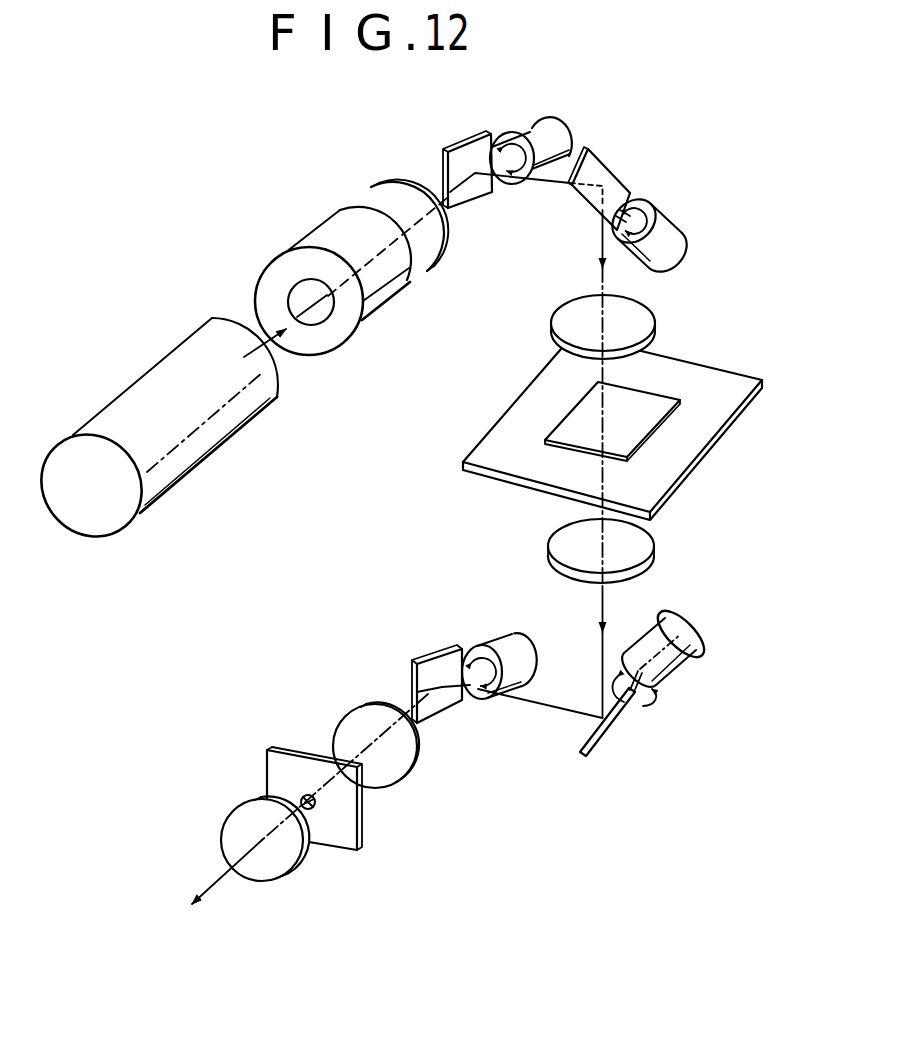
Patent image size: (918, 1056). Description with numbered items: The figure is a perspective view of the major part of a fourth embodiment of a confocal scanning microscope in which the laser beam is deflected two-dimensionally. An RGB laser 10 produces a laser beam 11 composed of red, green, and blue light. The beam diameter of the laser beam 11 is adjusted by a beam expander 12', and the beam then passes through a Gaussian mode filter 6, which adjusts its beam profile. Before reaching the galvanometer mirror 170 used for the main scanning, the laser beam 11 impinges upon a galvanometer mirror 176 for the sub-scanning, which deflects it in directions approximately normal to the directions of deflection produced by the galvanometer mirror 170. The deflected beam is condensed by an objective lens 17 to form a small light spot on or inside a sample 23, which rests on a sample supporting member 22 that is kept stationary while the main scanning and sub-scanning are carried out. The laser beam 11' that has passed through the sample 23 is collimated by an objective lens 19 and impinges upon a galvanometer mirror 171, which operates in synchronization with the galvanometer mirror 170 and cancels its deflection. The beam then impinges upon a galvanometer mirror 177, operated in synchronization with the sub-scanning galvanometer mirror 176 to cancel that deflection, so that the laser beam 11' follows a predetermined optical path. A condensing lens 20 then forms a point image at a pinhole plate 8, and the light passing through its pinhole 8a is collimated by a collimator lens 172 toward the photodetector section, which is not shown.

The RGB laser 10 is at (187, 367).
The laser beam 11 is at (386, 265).
The beam expander 12' is at (333, 262).
The Gaussian mode filter 6 is at (387, 200).
The galvanometer mirror for sub-scanning 176 is at (460, 143).
The galvanometer mirror for main scanning 170 is at (615, 167).
The objective lens 17 is at (640, 323).
The sample 23 is at (580, 415).
The sample supporting member 22 is at (690, 448).
The objective lens 19 is at (637, 553).
The laser beam 11' is at (564, 464).
The galvanometer mirror 177 is at (457, 650).
The condensing lens 20 is at (370, 707).
The pinhole plate 8 is at (292, 747).
The pinhole 8a is at (303, 797).
The collimator lens 172 is at (240, 828).
The galvanometer mirror 171 is at (607, 732).